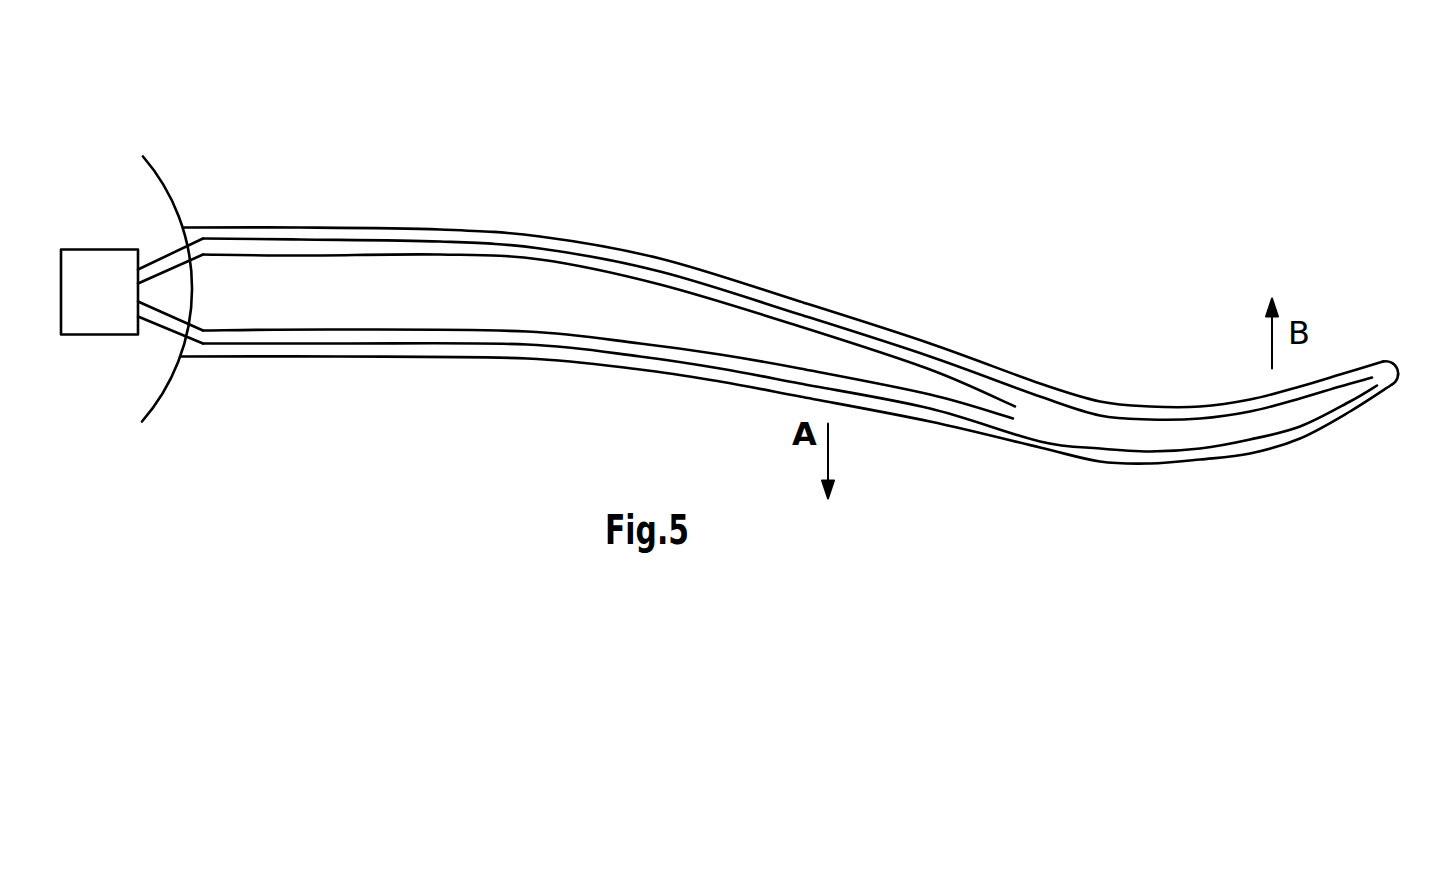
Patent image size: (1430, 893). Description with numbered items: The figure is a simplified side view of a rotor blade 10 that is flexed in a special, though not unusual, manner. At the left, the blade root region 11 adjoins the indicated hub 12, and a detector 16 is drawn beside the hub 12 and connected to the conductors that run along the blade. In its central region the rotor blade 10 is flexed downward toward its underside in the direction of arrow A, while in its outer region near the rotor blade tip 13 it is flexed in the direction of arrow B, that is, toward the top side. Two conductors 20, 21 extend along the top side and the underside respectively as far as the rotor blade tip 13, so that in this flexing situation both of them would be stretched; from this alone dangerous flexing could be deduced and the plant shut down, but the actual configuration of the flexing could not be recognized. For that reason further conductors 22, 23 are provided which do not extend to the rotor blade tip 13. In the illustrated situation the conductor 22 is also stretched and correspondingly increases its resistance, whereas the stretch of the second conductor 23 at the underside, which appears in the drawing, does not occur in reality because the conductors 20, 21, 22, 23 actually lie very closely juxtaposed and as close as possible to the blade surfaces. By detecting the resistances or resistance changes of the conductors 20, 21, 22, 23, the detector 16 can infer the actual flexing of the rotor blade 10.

The rotor blade 10 is at (780, 299).
The blade root region 11 is at (227, 225).
The hub 12 is at (160, 168).
The rotor blade tip 13 is at (1383, 360).
The detector 16 is at (115, 312).
The conductor 20 is at (446, 232).
The conductor 21 is at (412, 358).
The conductor 22 is at (545, 250).
The second conductor 23 is at (522, 345).